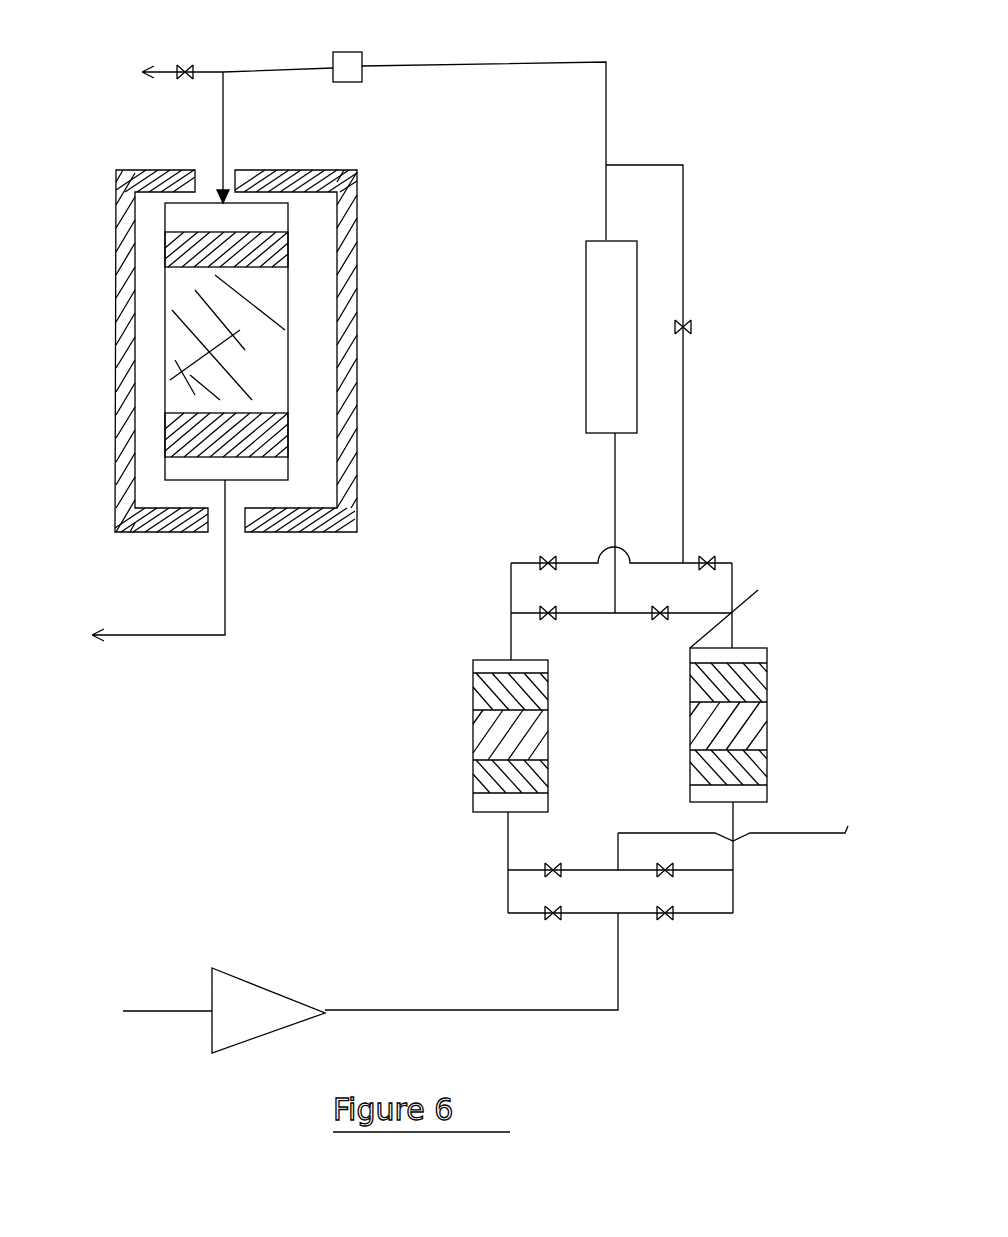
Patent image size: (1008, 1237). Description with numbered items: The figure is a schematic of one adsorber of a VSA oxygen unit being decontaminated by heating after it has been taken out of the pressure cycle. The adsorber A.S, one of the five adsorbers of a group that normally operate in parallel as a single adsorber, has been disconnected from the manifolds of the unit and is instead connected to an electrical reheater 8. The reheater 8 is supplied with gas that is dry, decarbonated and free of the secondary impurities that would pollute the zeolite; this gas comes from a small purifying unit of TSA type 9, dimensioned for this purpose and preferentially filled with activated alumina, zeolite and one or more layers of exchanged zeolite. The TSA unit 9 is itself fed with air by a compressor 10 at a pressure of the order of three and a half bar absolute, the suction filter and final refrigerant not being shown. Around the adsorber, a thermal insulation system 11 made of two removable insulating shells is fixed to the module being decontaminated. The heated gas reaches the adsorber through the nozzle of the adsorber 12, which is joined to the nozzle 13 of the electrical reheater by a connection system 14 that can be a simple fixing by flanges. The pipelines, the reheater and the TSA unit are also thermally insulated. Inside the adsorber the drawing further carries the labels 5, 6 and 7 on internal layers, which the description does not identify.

The lower plate 5 is at (270, 440).
The sample material 6 is at (275, 372).
The upper plate 7 is at (283, 245).
The electrical reheater 8 is at (590, 270).
The purifying unit of TSA type 9 is at (798, 643).
The compressor 10 is at (228, 986).
The thermal insulation system 11 is at (345, 225).
The nozzle of the adsorber 12 is at (228, 70).
The nozzle of the electrical reheater 13 is at (480, 62).
The connection system 14 is at (350, 50).
The adsorber A.S is at (195, 367).